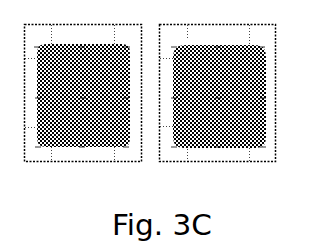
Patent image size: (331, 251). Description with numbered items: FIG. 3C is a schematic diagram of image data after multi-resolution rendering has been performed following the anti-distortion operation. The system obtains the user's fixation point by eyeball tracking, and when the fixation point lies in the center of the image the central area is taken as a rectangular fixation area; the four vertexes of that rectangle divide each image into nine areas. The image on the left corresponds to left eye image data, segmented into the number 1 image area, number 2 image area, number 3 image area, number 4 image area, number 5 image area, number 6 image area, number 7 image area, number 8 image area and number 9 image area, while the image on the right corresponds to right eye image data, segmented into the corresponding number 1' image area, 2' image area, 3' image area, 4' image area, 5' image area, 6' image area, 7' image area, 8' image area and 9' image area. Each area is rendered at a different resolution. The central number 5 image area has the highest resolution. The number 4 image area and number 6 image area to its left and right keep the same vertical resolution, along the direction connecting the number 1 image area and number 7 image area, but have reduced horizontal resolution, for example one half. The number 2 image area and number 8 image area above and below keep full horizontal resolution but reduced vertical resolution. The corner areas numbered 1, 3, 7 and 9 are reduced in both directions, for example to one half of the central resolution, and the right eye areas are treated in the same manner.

The number 1 image area 1 is at (37, 41).
The number 2 image area 2 is at (82, 41).
The number 3 image area 3 is at (127, 41).
The number 4 image area 4 is at (38, 92).
The number 5 image area 5 is at (83, 92).
The number 6 image area 6 is at (126, 92).
The number 7 image area 7 is at (38, 141).
The number 8 image area 8 is at (82, 141).
The number 9 image area 9 is at (126, 141).
The number 1' image area 1' is at (173, 41).
The number 2' image area 2' is at (217, 41).
The number 3' image area 3' is at (261, 41).
The number 4' image area 4' is at (173, 92).
The number 5' image area 5' is at (217, 92).
The number 6' image area 6' is at (262, 92).
The number 7' image area 7' is at (173, 141).
The number 8' image area 8' is at (217, 141).
The number 9' image area 9' is at (262, 141).